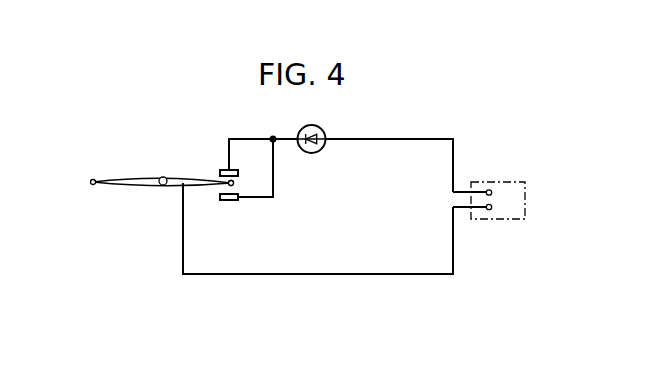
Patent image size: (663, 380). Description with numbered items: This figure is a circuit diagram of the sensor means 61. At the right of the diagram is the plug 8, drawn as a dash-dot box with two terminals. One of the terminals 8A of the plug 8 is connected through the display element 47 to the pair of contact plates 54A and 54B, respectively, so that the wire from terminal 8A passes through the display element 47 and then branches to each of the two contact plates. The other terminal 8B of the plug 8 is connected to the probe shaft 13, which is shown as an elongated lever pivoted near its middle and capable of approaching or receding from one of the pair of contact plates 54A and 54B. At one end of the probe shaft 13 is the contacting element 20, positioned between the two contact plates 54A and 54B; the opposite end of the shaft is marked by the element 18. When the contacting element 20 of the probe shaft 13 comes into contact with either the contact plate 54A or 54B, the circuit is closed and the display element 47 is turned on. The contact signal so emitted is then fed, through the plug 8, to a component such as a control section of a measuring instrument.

The plug 8 is at (520, 180).
The terminal of the plug 8A is at (489, 190).
The other terminal of the plug 8B is at (490, 212).
The probe shaft 13 is at (130, 180).
The lever end pin 18 is at (93, 185).
The contacting element 20 is at (237, 183).
The display element 47 is at (310, 153).
The contact plate 54A is at (220, 172).
The contact plate 54B is at (230, 202).
The sensor means 61 is at (423, 118).